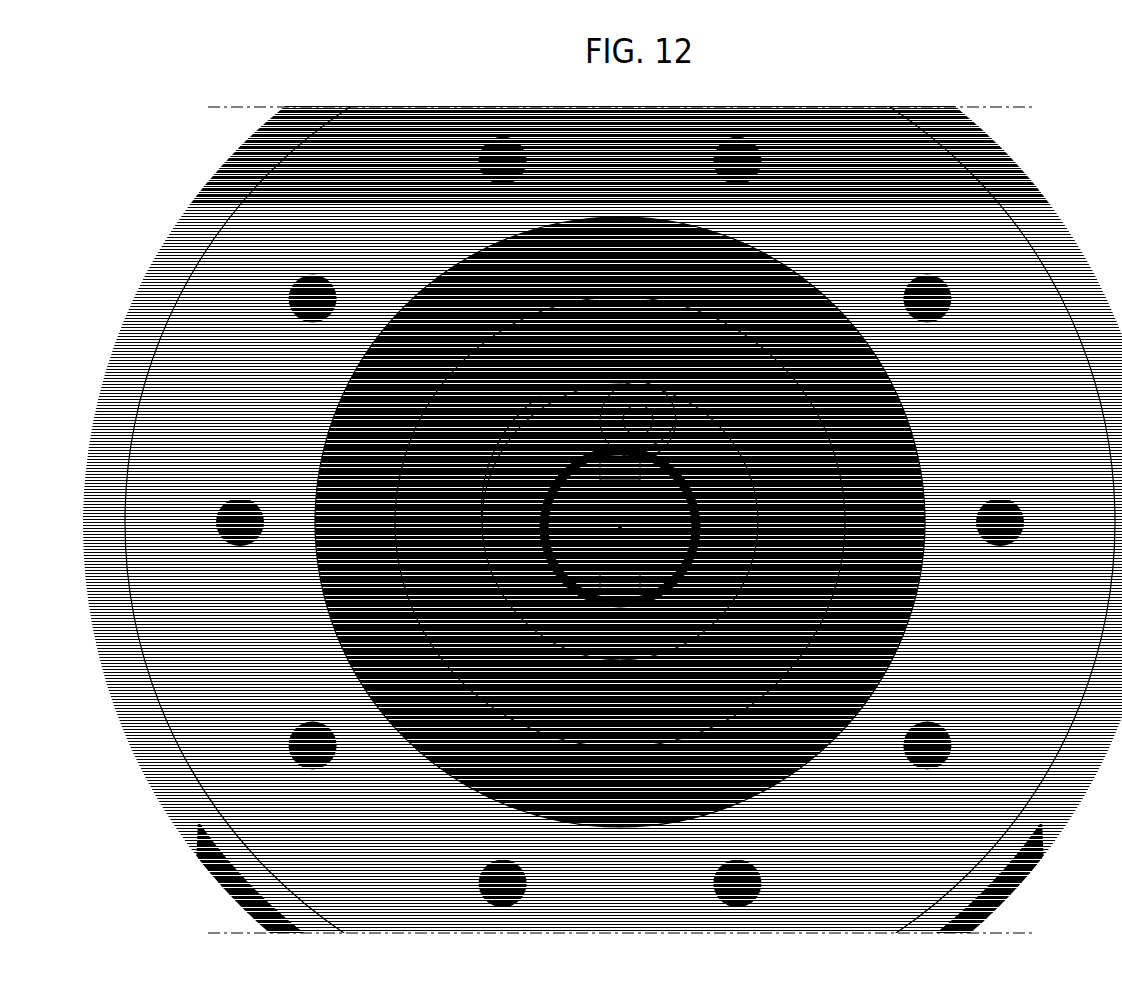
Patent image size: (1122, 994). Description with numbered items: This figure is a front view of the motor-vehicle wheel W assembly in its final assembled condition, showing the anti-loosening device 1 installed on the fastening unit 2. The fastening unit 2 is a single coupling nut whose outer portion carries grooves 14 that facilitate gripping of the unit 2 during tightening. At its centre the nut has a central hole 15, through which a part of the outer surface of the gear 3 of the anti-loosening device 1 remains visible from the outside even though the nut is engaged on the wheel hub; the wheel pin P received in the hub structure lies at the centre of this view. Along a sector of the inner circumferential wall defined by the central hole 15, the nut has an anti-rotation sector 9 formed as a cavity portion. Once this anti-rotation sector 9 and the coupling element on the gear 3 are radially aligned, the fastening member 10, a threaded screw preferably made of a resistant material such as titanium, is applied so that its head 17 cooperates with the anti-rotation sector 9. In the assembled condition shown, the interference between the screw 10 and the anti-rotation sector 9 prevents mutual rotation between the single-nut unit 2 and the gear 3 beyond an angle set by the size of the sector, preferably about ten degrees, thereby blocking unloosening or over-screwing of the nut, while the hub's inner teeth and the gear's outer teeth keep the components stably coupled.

The anti-loosening device 1 is at (538, 583).
The fastening unit 2 is at (757, 410).
The gear 3 is at (617, 630).
The anti-rotation sector 9 is at (675, 384).
The fastening member 10 is at (595, 426).
The grooves 14 is at (850, 625).
The central hole 15 is at (508, 472).
The head 17 is at (657, 430).
The wheel pin P is at (575, 530).
The wheel W is at (418, 106).